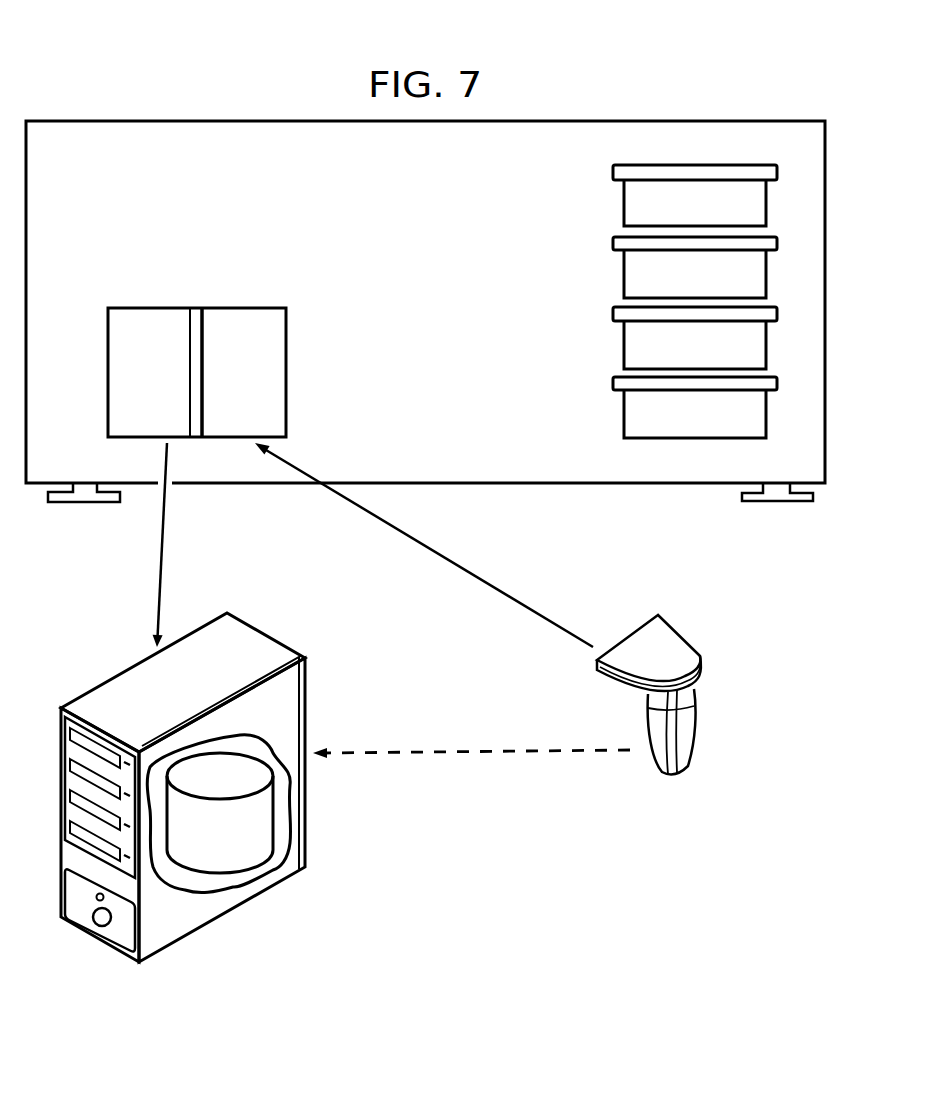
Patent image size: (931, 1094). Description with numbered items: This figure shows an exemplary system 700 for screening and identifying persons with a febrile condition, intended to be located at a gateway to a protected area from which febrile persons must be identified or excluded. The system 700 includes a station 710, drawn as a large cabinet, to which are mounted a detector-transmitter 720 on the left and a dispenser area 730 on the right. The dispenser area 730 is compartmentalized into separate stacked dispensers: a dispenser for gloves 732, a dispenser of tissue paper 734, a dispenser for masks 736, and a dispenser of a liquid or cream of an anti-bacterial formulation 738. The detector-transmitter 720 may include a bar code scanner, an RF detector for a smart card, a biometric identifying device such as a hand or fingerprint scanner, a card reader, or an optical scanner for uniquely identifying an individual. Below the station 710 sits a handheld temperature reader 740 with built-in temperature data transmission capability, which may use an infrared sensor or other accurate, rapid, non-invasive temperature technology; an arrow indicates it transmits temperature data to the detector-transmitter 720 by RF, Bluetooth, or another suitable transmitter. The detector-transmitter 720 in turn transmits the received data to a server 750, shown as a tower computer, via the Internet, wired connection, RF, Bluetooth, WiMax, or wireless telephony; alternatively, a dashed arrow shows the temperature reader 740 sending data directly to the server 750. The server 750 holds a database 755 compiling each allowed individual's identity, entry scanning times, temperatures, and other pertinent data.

The system 700 is at (150, 67).
The station 710 is at (630, 115).
The detector-transmitter 720 is at (155, 307).
The dispenser area 730 is at (462, 235).
The dispenser for gloves 732 is at (624, 203).
The dispenser of tissue paper 734 is at (624, 273).
The dispenser for masks 736 is at (624, 343).
The dispenser of a liquid or cream of an anti-bacterial formulation 738 is at (624, 413).
The temperature reader 740 is at (697, 732).
The server 750 is at (101, 676).
The database 755 is at (243, 846).